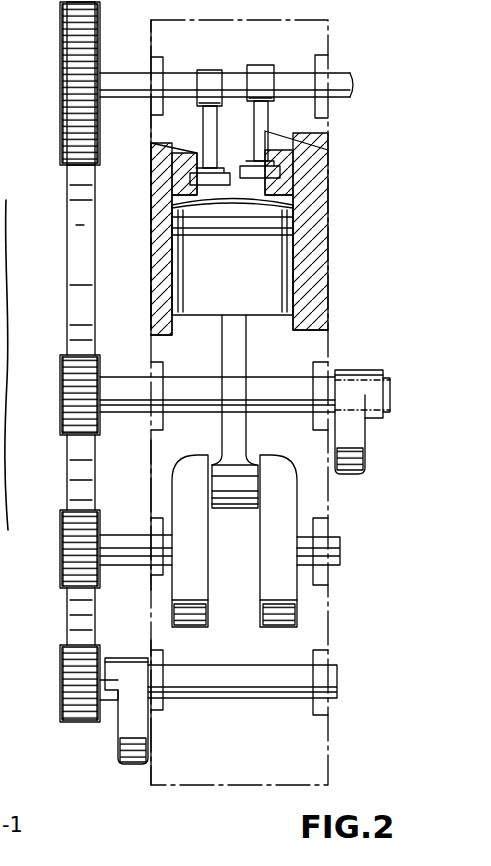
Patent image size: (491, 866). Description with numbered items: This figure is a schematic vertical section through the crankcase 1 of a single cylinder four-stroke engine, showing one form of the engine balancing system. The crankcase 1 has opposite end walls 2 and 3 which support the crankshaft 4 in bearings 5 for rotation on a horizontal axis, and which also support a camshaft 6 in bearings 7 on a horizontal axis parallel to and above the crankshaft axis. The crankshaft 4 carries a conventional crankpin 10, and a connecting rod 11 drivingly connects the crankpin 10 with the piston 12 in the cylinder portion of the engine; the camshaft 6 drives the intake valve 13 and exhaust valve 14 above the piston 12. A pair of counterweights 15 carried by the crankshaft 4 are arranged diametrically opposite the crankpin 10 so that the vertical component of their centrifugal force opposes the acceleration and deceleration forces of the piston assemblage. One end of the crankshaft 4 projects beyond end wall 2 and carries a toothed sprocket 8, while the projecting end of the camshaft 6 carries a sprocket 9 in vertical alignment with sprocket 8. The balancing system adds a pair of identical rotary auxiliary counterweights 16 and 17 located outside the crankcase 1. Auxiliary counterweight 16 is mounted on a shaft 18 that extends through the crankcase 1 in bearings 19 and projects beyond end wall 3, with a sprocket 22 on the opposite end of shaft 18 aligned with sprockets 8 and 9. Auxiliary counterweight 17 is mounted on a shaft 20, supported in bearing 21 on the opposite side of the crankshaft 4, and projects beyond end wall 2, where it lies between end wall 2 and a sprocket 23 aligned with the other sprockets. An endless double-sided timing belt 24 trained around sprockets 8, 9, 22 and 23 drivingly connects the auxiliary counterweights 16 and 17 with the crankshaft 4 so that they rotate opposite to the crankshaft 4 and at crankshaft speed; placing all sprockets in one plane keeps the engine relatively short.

The crankcase 1 is at (241, 796).
The end wall 2 is at (150, 252).
The end wall 3 is at (328, 265).
The crankshaft 4 is at (126, 535).
The bearings 5 is at (162, 584).
The camshaft 6 is at (120, 74).
The bearings 7 is at (162, 62).
The sprocket 8 is at (62, 520).
The sprocket 9 is at (62, 68).
The crankpin 10 is at (260, 462).
The connecting rod 11 is at (247, 360).
The piston 12 is at (242, 286).
The intake valve 13 is at (205, 152).
The exhaust valve 14 is at (262, 133).
The counterweights 15 is at (190, 628).
The auxiliary counterweight 16 is at (365, 450).
The auxiliary counterweight 17 is at (118, 755).
The shaft 18 is at (124, 377).
The bearings 19 is at (322, 358).
The shaft 20 is at (240, 700).
The bearing 21 is at (163, 706).
The sprocket 22 is at (62, 360).
The sprocket 23 is at (62, 722).
The timing belt 24 is at (67, 258).